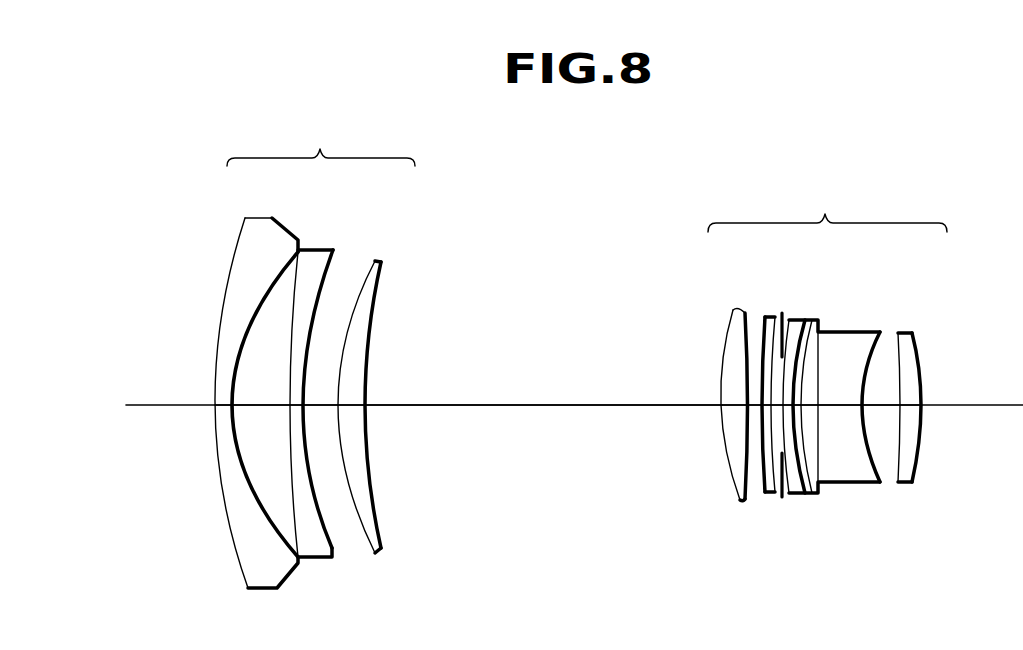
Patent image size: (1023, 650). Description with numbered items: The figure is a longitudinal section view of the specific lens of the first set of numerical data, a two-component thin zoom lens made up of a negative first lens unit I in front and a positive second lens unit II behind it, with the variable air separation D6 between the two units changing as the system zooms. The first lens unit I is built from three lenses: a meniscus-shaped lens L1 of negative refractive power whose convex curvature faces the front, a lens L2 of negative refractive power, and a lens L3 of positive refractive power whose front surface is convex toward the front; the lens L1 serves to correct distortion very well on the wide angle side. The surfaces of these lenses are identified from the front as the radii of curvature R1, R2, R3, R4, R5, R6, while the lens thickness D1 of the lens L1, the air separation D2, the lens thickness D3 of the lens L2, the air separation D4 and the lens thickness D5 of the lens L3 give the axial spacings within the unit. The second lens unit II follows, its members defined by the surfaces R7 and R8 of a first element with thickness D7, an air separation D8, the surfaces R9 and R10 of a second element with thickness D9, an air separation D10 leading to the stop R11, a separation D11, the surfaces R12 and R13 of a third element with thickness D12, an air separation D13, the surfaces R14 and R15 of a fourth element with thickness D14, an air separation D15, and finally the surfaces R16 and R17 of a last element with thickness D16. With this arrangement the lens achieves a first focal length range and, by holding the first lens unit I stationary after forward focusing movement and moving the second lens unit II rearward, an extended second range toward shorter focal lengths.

The first lens unit I is at (321, 141).
The second lens unit II is at (827, 207).
The meniscus-shaped lens L1 is at (240, 403).
The lens of negative refractive power L2 is at (315, 432).
The lens of positive refractive power L3 is at (389, 407).
The radius of curvature of the first lens surface R1 is at (243, 221).
The radius of curvature of the second lens surface R2 is at (296, 256).
The radius of curvature of the third lens surface R3 is at (297, 263).
The radius of curvature of the fourth lens surface R4 is at (332, 266).
The radius of curvature of the fifth lens surface R5 is at (361, 268).
The radius of curvature of the sixth lens surface R6 is at (382, 264).
The radius of curvature of the seventh lens surface R7 is at (733, 325).
The radius of curvature of the eighth lens surface R8 is at (740, 309).
The radius of curvature of the ninth lens surface R9 is at (767, 327).
The radius of curvature of the tenth lens surface R10 is at (777, 321).
The stop R11 is at (788, 323).
The radius of curvature of the twelfth lens surface R12 is at (800, 322).
The radius of curvature of the thirteenth lens surface R13 is at (818, 327).
The radius of curvature of the fourteenth lens surface R14 is at (818, 353).
The radius of curvature of the fifteenth lens surface R15 is at (882, 331).
The radius of curvature of the sixteenth lens surface R16 is at (902, 331).
The radius of curvature of the seventeenth lens surface R17 is at (917, 332).
The first lens thickness D1 is at (225, 408).
The second air separation D2 is at (257, 409).
The third lens thickness D3 is at (297, 410).
The fourth air separation D4 is at (320, 410).
The fifth lens thickness D5 is at (352, 408).
The sixth air separation D6 is at (556, 408).
The seventh lens thickness D7 is at (730, 408).
The eighth air separation D8 is at (749, 409).
The ninth lens thickness D9 is at (766, 410).
The tenth air separation D10 is at (778, 410).
The eleventh air separation D11 is at (788, 410).
The twelfth lens thickness D12 is at (798, 410).
The thirteenth air separation D13 is at (812, 410).
The fourteenth lens thickness D14 is at (838, 410).
The fifteenth air separation D15 is at (884, 410).
The sixteenth lens thickness D16 is at (911, 409).